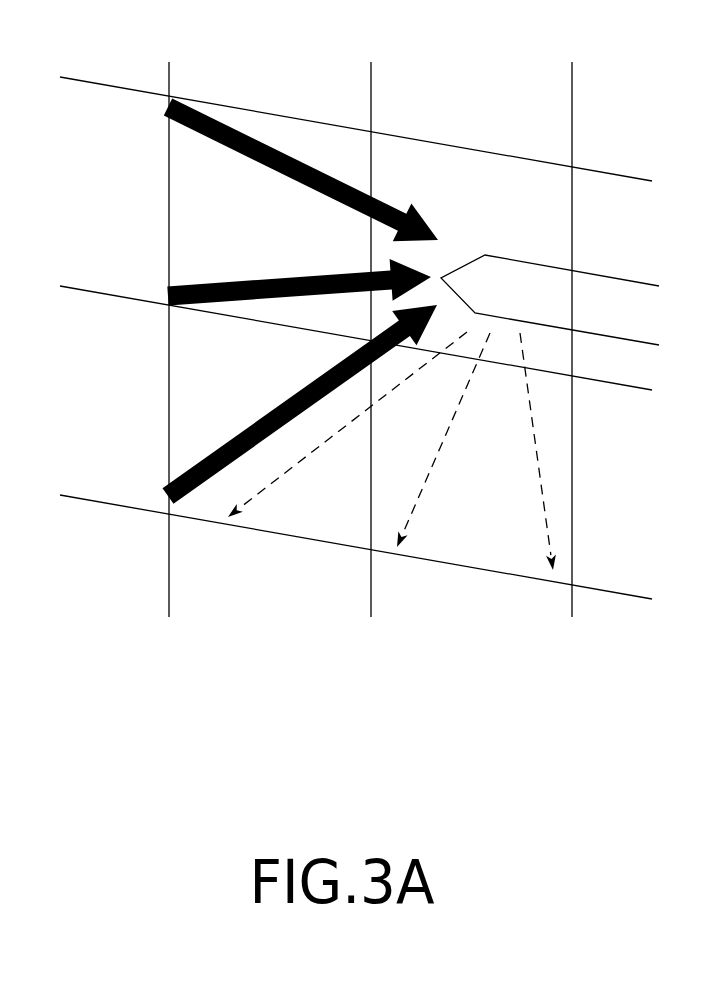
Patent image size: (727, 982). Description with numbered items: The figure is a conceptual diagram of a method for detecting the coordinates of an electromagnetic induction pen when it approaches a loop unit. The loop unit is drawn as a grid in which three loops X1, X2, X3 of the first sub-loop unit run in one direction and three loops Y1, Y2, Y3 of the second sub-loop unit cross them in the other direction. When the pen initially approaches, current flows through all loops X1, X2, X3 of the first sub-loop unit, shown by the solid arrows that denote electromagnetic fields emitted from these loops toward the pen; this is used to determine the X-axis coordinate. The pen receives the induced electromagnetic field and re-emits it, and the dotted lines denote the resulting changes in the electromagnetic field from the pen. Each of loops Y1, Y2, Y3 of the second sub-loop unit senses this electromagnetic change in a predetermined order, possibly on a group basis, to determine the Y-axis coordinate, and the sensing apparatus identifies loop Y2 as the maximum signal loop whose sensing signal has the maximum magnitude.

The loop X1 of the first sub-loop unit X1 is at (342, 123).
The loop X2 of the first sub-loop unit X2 is at (343, 332).
The loop X3 of the first sub-loop unit X3 is at (343, 540).
The loop Y1 of the second sub-loop unit Y1 is at (574, 357).
The loop Y2 of the second sub-loop unit Y2 is at (373, 357).
The loop Y3 of the second sub-loop unit Y3 is at (171, 357).